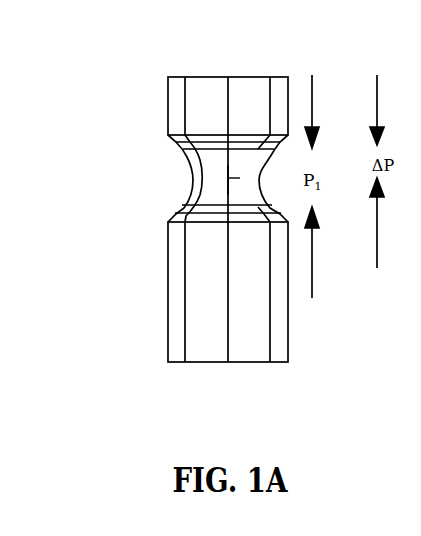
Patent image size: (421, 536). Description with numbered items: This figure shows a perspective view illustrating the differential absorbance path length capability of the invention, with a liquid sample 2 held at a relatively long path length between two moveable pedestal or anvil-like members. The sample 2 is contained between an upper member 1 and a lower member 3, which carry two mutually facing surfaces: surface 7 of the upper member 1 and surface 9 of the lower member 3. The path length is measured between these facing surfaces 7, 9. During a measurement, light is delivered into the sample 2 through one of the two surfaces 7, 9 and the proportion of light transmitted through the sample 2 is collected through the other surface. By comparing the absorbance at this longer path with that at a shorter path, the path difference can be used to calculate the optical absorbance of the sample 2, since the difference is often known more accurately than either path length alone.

The upper member 1 is at (240, 77).
The sample 2 is at (207, 178).
The surface of upper member 7 is at (206, 154).
The surface of lower member 9 is at (203, 192).
The lower member 3 is at (247, 362).